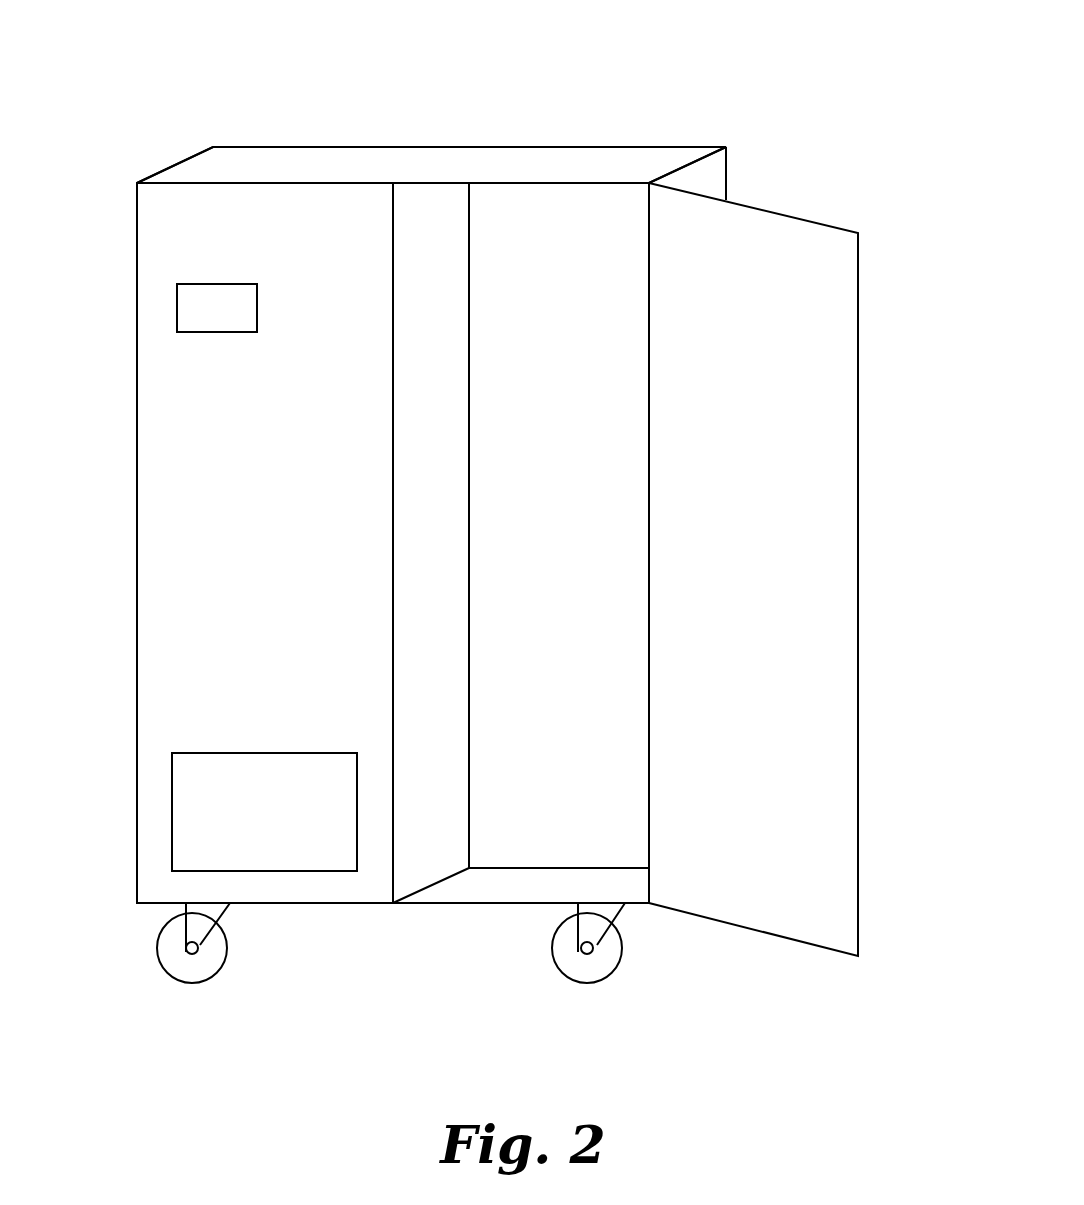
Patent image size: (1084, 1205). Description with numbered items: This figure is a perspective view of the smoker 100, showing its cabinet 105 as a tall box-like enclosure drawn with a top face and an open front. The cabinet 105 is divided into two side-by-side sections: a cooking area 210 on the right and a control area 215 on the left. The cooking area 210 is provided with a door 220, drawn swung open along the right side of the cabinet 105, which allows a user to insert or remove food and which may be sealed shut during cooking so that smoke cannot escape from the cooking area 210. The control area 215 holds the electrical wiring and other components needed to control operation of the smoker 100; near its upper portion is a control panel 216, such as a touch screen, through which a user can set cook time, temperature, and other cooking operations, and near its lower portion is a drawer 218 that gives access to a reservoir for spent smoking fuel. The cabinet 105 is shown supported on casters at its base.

The smoker 100 is at (502, 513).
The cabinet 105 is at (425, 170).
The cooking area 210 is at (590, 556).
The control area 215 is at (242, 556).
The control panel 216 is at (187, 307).
The drawer 218 is at (286, 831).
The door 220 is at (808, 458).